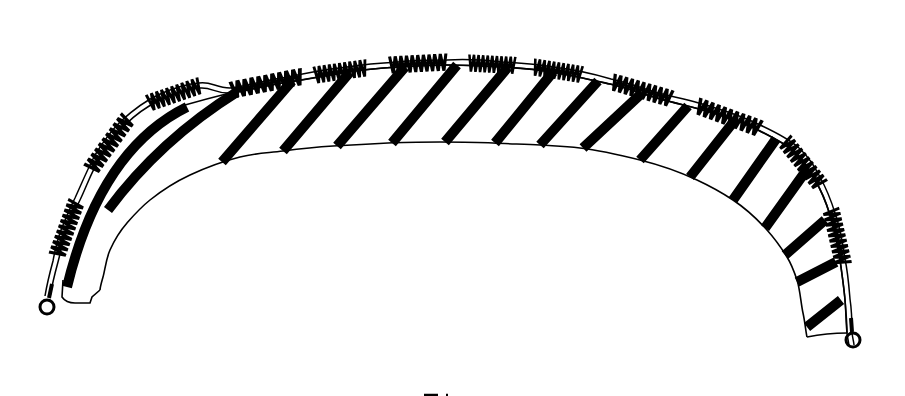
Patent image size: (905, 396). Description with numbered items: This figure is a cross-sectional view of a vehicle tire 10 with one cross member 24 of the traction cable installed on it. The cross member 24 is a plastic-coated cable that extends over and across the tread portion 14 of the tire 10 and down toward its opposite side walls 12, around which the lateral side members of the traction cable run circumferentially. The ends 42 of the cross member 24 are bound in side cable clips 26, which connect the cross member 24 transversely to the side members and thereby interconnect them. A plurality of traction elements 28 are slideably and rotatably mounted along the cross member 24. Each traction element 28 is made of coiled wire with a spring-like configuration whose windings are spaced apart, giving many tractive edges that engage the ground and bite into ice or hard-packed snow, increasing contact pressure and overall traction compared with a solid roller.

The vehicle tire 10 is at (461, 155).
The side wall 12 is at (843, 280).
The tread portion 14 is at (620, 127).
The cross member 24 is at (693, 92).
The side cable clip 26 is at (836, 351).
The traction element 28 is at (821, 160).
The cross member end 42 is at (827, 307).